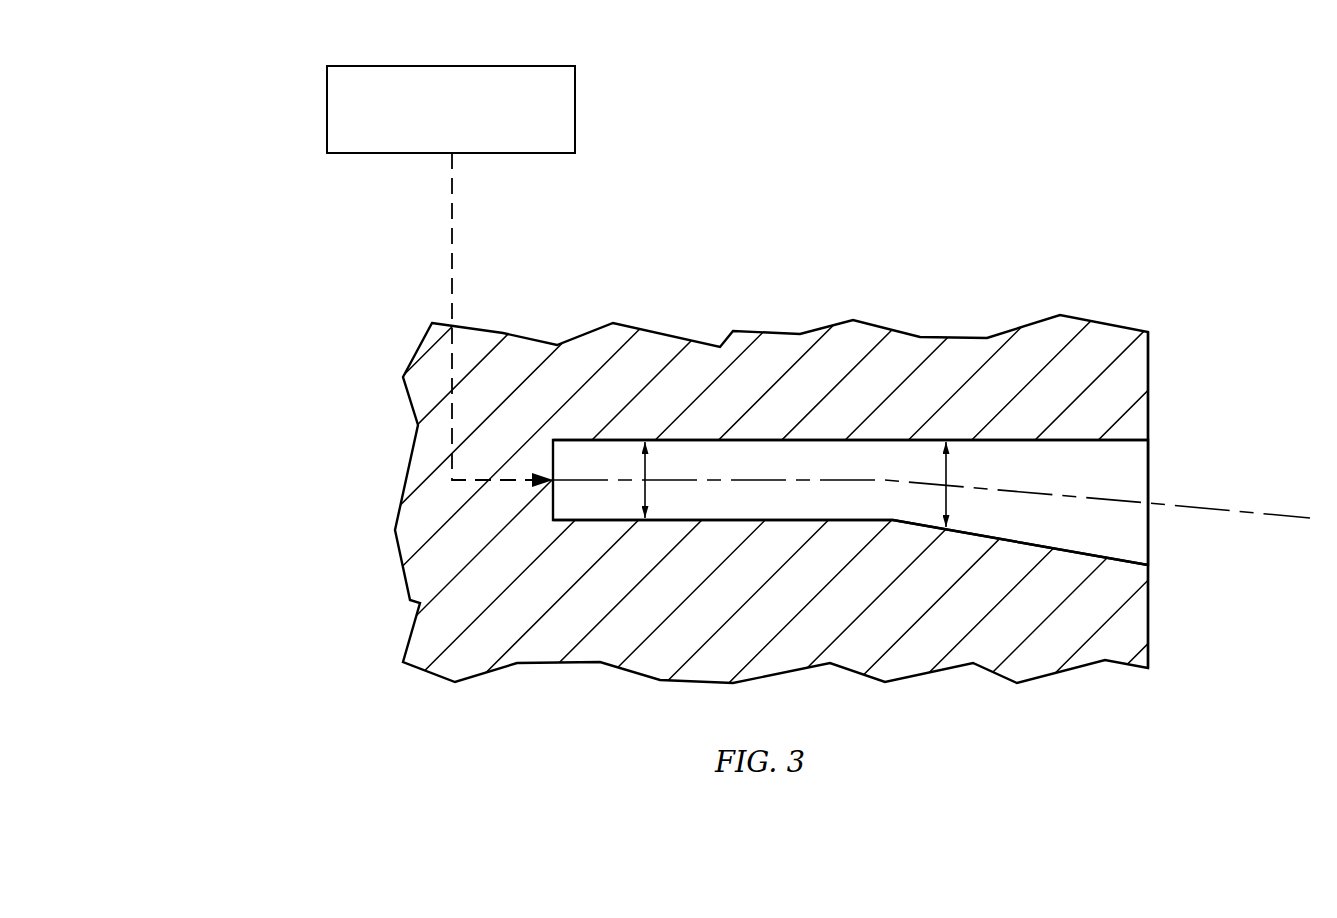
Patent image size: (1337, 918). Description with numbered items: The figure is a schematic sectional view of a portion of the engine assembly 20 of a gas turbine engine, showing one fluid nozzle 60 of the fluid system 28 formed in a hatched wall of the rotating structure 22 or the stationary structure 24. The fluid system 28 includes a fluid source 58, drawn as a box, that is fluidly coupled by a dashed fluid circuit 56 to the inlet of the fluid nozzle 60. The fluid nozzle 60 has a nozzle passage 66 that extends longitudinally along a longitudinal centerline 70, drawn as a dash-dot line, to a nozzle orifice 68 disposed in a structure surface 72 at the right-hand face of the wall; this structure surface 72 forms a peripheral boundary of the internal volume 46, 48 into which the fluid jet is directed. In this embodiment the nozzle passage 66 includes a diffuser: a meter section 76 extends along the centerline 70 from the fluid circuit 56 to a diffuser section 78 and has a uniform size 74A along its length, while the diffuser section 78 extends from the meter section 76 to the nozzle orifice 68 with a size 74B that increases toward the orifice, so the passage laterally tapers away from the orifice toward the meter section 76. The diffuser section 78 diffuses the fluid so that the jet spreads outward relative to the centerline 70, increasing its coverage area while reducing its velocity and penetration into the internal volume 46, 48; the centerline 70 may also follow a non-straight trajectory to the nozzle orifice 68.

The engine assembly 20 is at (677, 383).
The rotating structure 22 is at (393, 625).
The stationary structure 24 is at (677, 500).
The fluid system 28 is at (381, 254).
The internal volume 46 is at (1230, 487).
The internal volume 48 is at (1230, 487).
The fluid circuit 56 is at (452, 207).
The fluid source 58 is at (465, 140).
The fluid nozzle 60 is at (931, 482).
The nozzle passage 66 is at (831, 507).
The nozzle orifice 68 is at (1150, 542).
The longitudinal centerline 70 is at (1305, 522).
The structure surface 72 is at (1150, 373).
The uniform size 74A is at (648, 492).
The changing size 74B is at (950, 502).
The meter section 76 is at (724, 450).
The diffuser section 78 is at (1013, 450).